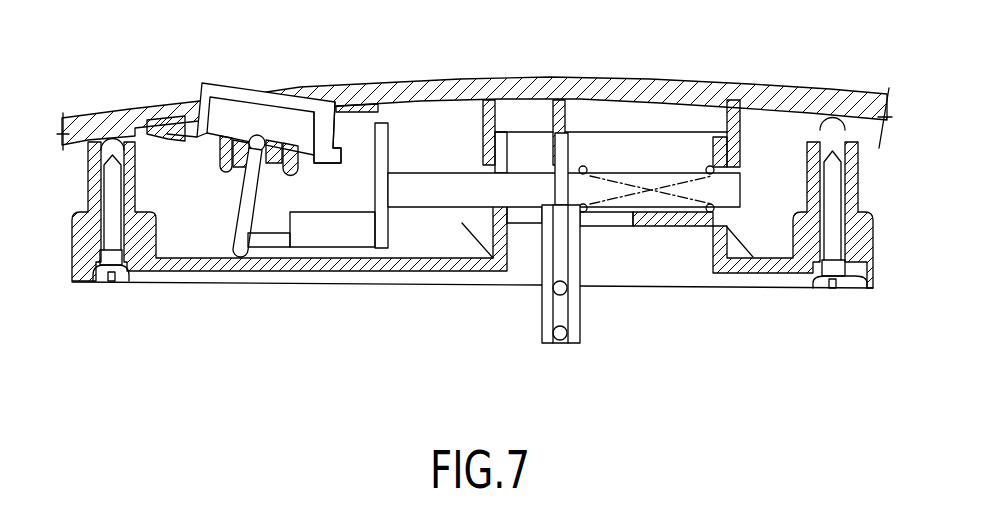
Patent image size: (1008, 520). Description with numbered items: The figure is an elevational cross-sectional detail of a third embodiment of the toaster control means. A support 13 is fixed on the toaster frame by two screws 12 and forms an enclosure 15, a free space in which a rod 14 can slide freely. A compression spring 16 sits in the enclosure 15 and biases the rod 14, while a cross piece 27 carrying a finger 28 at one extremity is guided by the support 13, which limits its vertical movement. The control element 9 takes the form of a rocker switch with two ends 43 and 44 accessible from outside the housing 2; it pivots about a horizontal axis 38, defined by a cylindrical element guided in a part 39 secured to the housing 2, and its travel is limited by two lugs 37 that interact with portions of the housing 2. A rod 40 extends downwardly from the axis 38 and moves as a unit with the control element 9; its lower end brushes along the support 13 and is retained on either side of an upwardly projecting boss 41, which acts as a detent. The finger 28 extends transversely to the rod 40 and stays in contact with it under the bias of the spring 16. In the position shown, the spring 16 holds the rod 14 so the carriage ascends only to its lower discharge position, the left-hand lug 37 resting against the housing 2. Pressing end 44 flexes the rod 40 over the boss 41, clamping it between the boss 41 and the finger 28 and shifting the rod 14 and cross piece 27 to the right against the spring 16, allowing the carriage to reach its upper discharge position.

The housing 2 is at (452, 80).
The control element 9 is at (227, 110).
The screws 12 is at (124, 272).
The support 13 is at (67, 255).
The rod 14 is at (563, 253).
The enclosure 15 is at (667, 150).
The compression spring 16 is at (583, 166).
The cross piece 27 is at (742, 174).
The finger 28 is at (279, 243).
The lugs 37 is at (167, 133).
The axis 38 is at (257, 134).
The part 39 is at (298, 172).
The rod 40 is at (240, 212).
The boss 41 is at (248, 243).
The end 43 is at (314, 108).
The end 44 is at (203, 83).